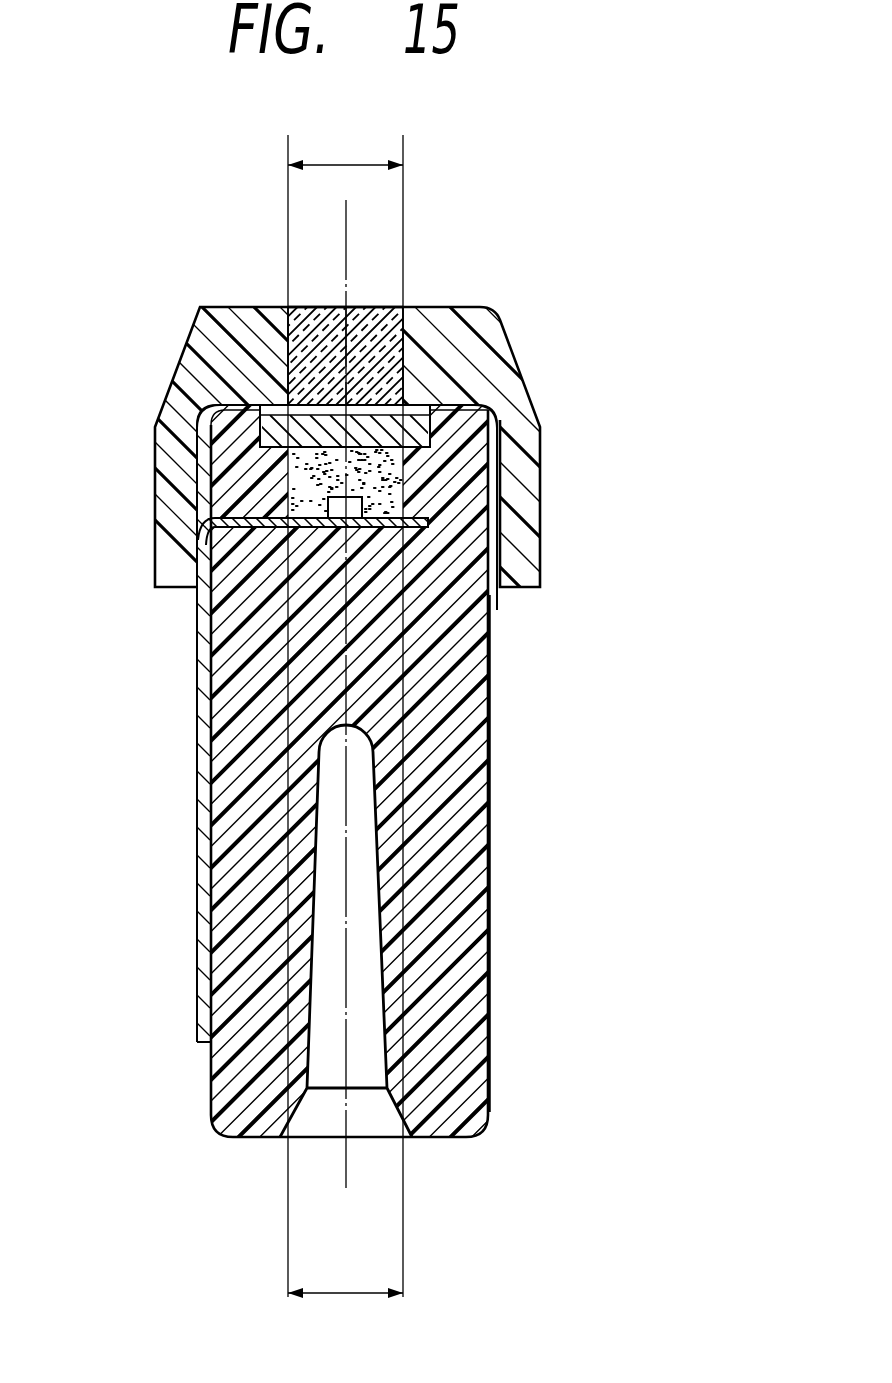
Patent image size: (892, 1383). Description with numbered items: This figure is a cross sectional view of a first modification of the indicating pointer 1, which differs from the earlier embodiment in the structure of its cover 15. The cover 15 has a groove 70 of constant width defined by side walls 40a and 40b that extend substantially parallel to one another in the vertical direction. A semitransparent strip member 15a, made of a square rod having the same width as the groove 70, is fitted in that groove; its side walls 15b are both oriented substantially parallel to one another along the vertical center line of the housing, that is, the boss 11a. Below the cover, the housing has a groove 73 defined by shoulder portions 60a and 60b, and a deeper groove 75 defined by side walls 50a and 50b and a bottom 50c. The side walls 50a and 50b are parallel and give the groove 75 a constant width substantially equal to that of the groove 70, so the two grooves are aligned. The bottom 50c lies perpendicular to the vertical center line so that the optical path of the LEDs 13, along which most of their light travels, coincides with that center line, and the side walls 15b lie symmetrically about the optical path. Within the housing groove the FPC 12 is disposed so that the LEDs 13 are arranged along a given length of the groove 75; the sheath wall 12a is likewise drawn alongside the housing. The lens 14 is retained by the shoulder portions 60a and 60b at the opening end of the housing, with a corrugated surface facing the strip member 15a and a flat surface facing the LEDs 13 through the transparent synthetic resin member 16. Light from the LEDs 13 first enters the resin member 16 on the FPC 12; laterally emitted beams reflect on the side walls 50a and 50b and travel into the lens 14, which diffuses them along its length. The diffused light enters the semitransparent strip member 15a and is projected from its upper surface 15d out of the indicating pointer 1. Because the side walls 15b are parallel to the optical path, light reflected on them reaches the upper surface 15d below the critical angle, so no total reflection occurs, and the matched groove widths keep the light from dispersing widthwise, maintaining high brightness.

The indicating pointer 1 is at (583, 787).
The boss 11a is at (250, 853).
The FPC 12 is at (346, 723).
The sheath side wall 12a is at (203, 632).
The LEDs 13 is at (419, 419).
The lens 14 is at (260, 433).
The cover 15 is at (442, 281).
The semitransparent strip member 15a is at (362, 325).
The side walls 15b is at (288, 342).
The upper surface 15d is at (311, 307).
The transparent synthetic resin member 16 is at (403, 480).
The side wall 40a is at (403, 343).
The side wall 40b is at (282, 342).
The side wall 50a is at (290, 492).
The side wall 50b is at (430, 523).
The bottom 50c is at (203, 547).
The shoulder portion 60a is at (487, 405).
The shoulder portion 60b is at (218, 397).
The groove 70 is at (376, 334).
The groove 73 is at (410, 488).
The groove 75 is at (374, 500).